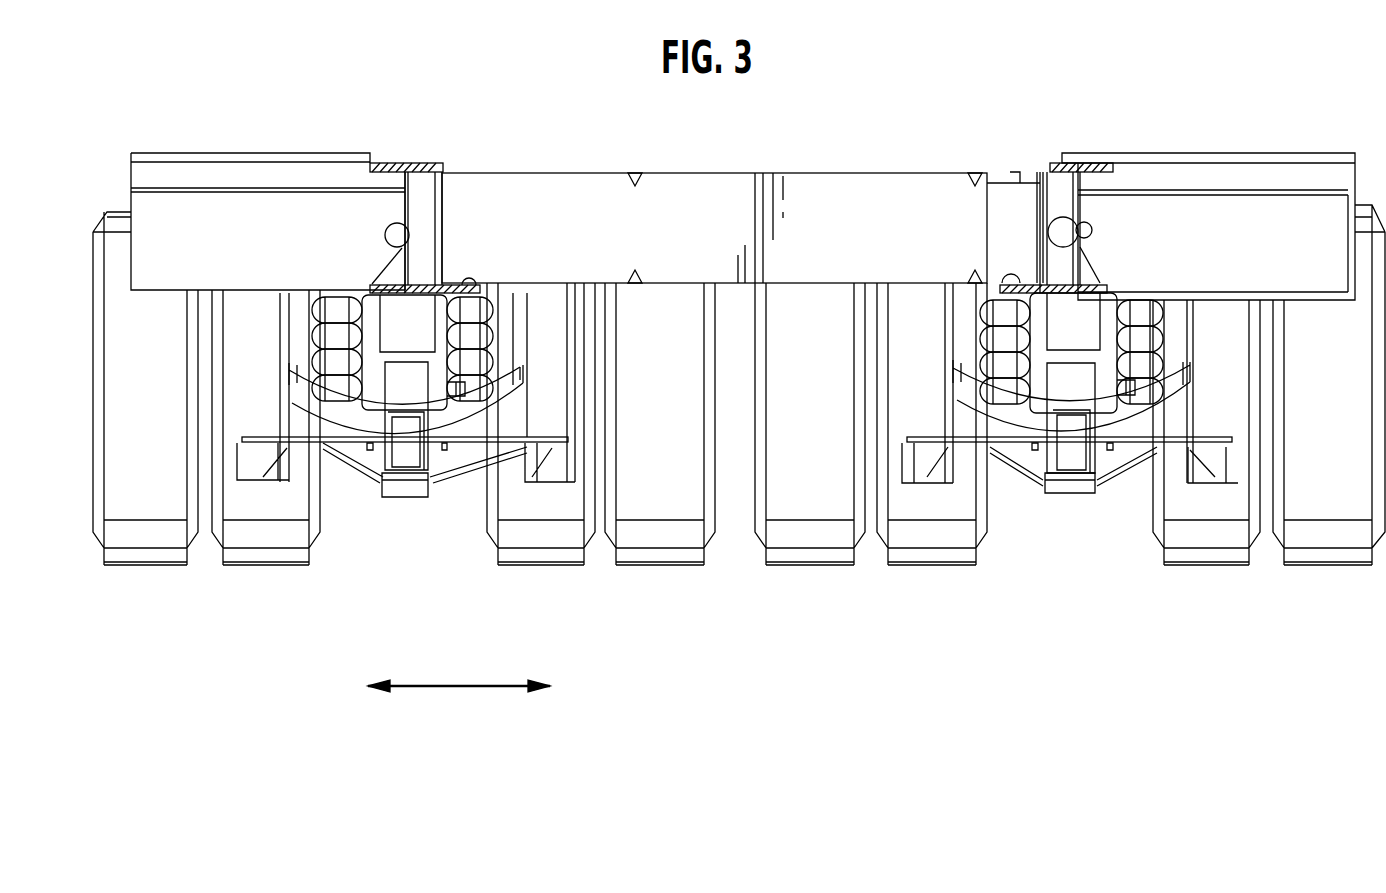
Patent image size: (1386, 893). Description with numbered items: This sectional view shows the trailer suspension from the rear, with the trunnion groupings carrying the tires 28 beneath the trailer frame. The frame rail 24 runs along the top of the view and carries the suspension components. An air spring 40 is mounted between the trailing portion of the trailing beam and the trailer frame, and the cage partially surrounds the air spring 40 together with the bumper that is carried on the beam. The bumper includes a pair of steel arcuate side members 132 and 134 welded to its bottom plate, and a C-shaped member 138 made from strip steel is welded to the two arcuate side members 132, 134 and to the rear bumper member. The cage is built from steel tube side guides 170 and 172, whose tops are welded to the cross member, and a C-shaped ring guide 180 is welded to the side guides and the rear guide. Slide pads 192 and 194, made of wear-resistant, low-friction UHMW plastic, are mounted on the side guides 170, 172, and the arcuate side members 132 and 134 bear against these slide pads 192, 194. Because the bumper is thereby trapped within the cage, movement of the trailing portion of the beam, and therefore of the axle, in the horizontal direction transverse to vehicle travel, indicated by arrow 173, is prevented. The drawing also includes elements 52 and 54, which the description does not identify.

The frame rail 24 is at (437, 168).
The tire 28 is at (156, 568).
The air spring 40 is at (497, 367).
The guide rail 52 is at (357, 313).
The gripper foot 54 is at (370, 458).
The arcuate side member 132 is at (284, 362).
The arcuate side member 134 is at (513, 348).
The C-shaped member 138 is at (497, 398).
The side guide 170 is at (255, 300).
The side guide 172 is at (562, 300).
The arrow 173 is at (462, 684).
The C-shaped ring guide 180 is at (300, 443).
The slide pad 192 is at (290, 414).
The slide pad 194 is at (537, 388).